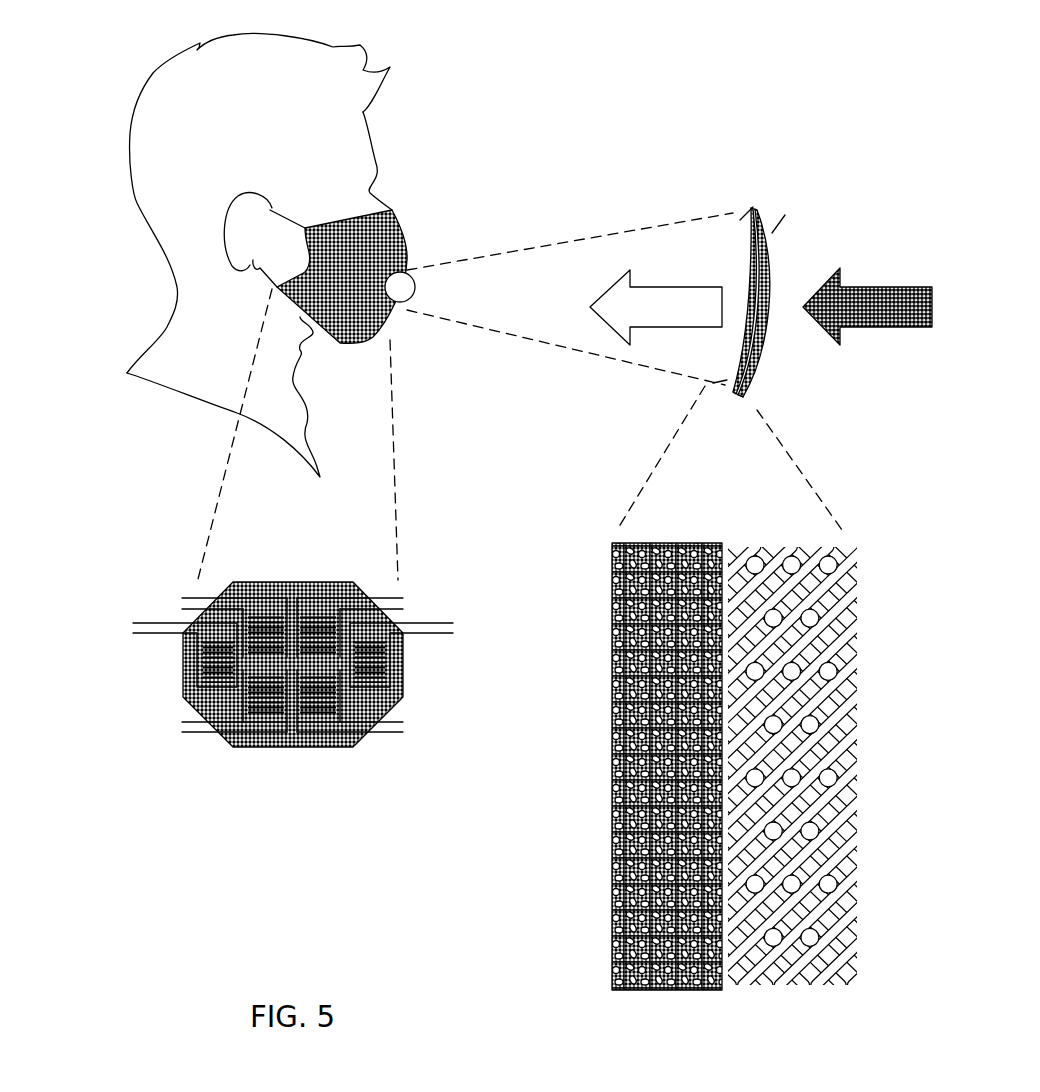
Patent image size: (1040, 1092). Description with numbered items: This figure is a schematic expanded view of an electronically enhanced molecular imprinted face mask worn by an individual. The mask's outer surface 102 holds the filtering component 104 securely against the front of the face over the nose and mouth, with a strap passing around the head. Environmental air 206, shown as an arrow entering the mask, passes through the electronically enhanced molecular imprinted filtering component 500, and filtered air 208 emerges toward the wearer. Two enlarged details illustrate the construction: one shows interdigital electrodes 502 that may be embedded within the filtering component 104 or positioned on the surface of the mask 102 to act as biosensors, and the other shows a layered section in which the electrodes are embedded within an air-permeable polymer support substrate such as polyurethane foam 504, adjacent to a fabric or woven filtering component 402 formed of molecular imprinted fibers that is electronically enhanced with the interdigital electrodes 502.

The electronically enhanced molecular imprinted filtering component 500 is at (439, 272).
The outer surface 102 is at (404, 233).
The filtering component 104 is at (310, 360).
The environmental air 206 is at (880, 282).
The filtered air 208 is at (592, 322).
The fabric or woven filtering component 402 is at (748, 380).
The interdigital electrodes 502 is at (193, 672).
The polyurethane foam 504 is at (753, 343).